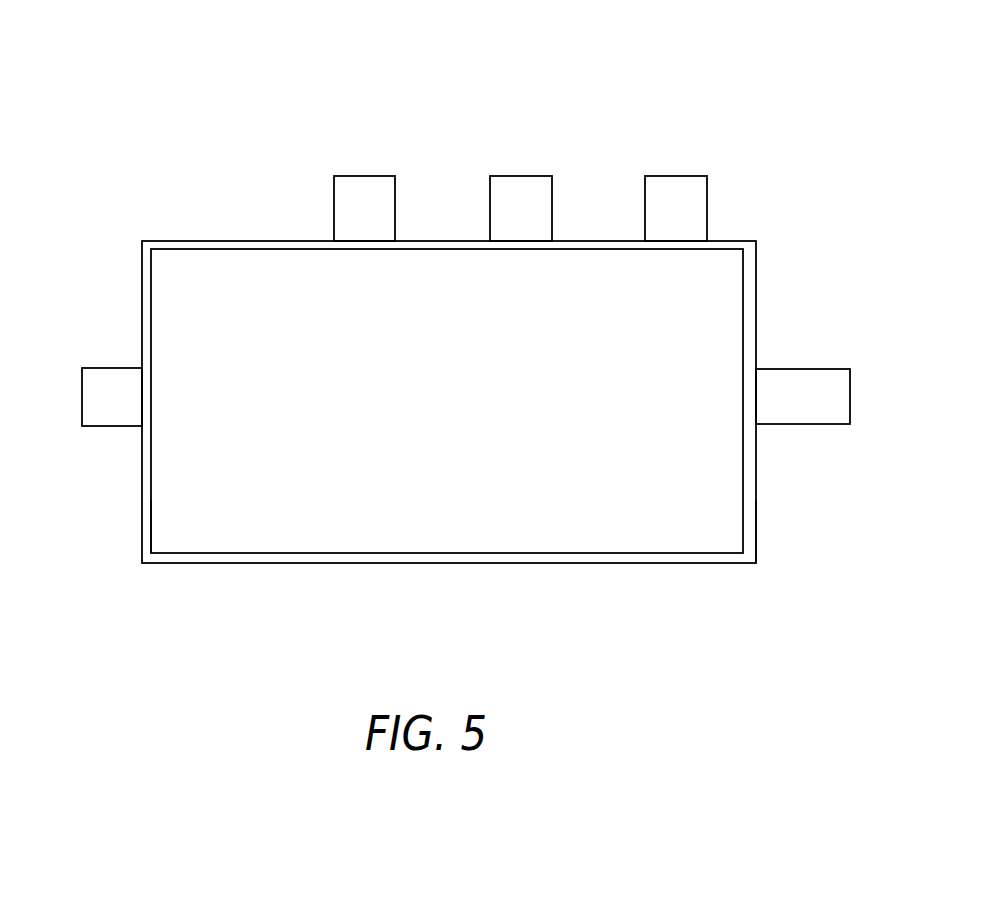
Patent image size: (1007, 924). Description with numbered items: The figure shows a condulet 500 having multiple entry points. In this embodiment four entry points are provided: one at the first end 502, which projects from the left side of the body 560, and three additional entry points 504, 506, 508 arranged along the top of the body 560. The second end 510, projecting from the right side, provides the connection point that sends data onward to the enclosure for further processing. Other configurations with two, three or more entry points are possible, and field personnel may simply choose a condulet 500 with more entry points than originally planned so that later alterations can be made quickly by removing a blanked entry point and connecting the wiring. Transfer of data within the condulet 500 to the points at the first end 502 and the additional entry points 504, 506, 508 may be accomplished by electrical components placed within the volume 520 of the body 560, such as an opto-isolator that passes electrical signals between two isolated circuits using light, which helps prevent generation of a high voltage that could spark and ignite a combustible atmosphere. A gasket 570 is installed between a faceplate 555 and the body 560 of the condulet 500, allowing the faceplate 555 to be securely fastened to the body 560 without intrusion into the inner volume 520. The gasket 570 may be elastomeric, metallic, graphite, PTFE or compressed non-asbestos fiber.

The condulet 500 is at (772, 113).
The volume 520 is at (96, 196).
The faceplate 555 is at (267, 474).
The additional entry point 504 is at (343, 215).
The additional entry point 506 is at (507, 215).
The additional entry point 508 is at (662, 217).
The first end 502 is at (117, 385).
The second end 510 is at (807, 380).
The gasket 570 is at (150, 532).
The body 560 is at (757, 553).